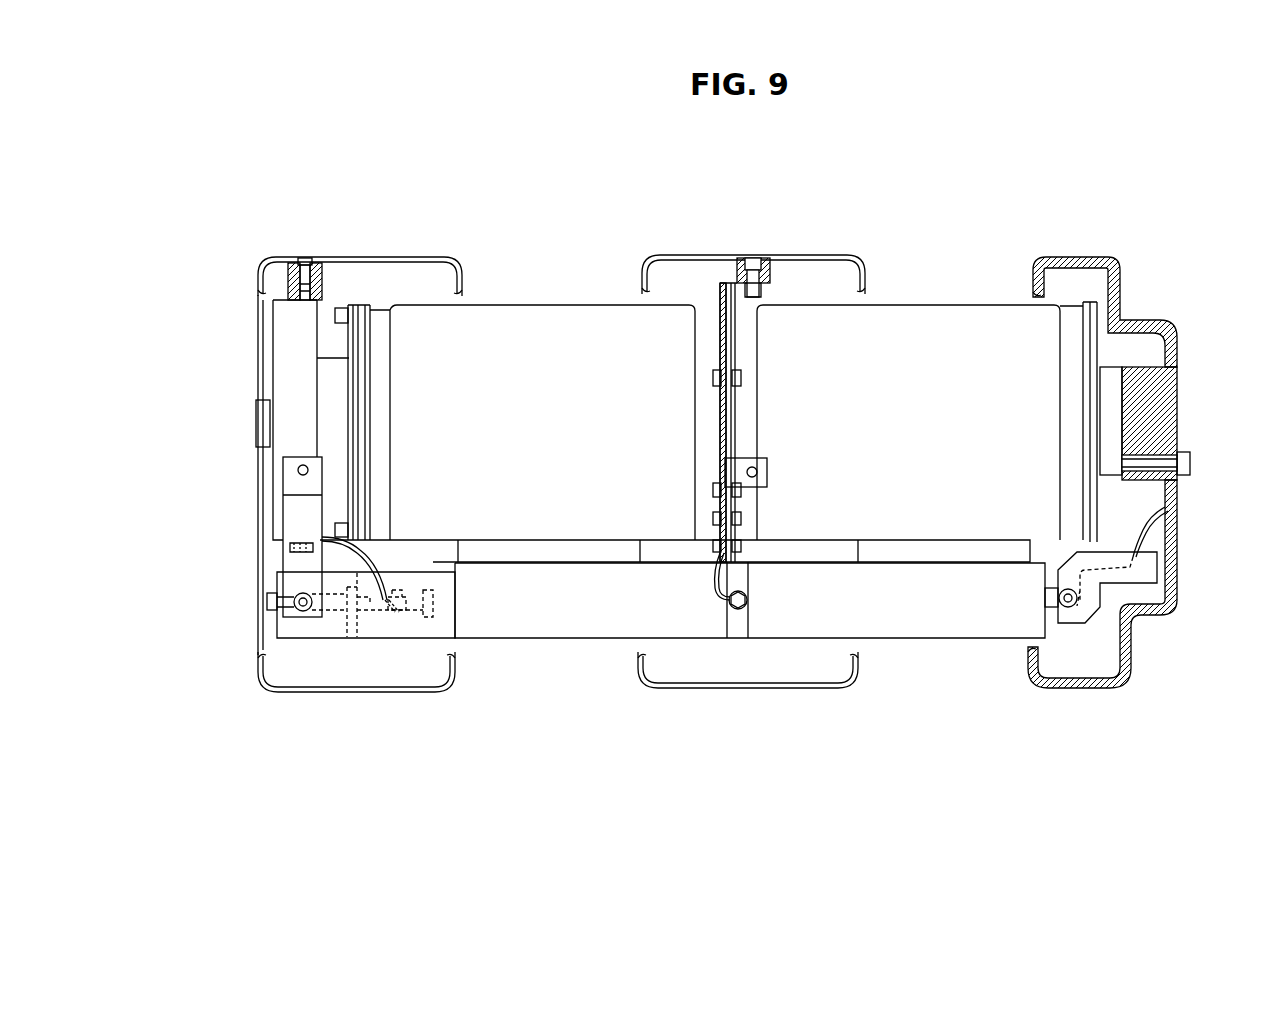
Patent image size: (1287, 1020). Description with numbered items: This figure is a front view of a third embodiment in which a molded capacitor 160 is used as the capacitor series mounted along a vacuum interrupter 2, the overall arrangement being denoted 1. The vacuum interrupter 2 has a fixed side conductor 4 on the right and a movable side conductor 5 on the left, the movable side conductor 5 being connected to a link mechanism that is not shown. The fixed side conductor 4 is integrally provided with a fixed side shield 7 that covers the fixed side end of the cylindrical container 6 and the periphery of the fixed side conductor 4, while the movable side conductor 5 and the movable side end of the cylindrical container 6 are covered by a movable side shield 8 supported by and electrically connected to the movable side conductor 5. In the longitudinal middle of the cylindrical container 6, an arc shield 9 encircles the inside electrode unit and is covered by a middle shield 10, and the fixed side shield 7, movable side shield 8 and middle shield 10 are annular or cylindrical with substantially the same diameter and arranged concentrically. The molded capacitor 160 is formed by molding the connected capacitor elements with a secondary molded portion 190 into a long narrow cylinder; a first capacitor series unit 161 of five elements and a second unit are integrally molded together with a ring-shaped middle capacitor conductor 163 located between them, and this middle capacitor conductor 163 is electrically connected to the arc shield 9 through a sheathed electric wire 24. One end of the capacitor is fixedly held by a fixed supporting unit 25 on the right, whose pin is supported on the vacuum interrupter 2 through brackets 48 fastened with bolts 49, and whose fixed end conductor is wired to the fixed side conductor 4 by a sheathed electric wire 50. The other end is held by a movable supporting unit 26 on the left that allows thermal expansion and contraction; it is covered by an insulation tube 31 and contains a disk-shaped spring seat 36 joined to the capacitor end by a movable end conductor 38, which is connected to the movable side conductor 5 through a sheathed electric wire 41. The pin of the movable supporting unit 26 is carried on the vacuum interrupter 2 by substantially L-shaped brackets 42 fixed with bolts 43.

The tank mounting structure 1 is at (945, 668).
The vacuum interrupter 2 is at (962, 303).
The fixed side conductor 4 is at (1110, 408).
The movable side conductor 5 is at (327, 387).
The cylindrical container 6 is at (893, 330).
The fixed side shield 7 is at (1078, 257).
The movable side shield 8 is at (362, 258).
The arc shield 9 is at (733, 342).
The middle shield 10 is at (800, 255).
The sheathed electric wire 24 is at (712, 588).
The fixed supporting unit 25 is at (1090, 630).
The movable supporting unit 26 is at (285, 662).
The insulation tube 31 is at (377, 620).
The spring seat 36 is at (345, 620).
The movable end conductor 38 is at (428, 612).
The sheathed electric wire 41 is at (380, 555).
The bracket 42 is at (298, 567).
The bolt 43 is at (300, 605).
The bracket 48 is at (1122, 612).
The bolt 49 is at (1083, 630).
The sheathed electric wire 50 is at (1165, 507).
The molded capacitor 160 is at (905, 685).
The first capacitor series unit 161 is at (545, 582).
The middle capacitor conductor 163 is at (737, 620).
The secondary molded portion 190 is at (573, 620).